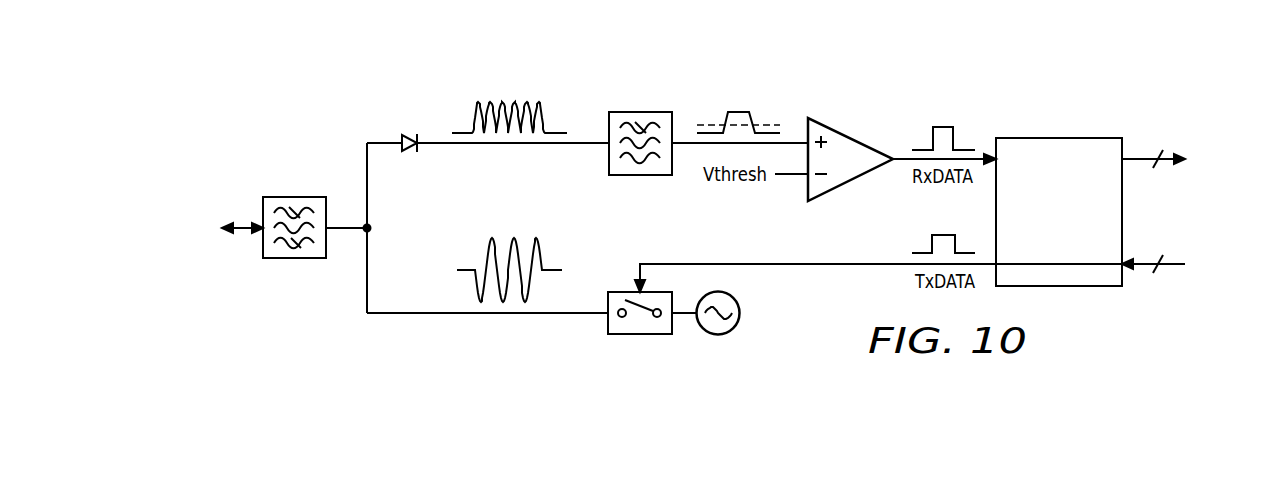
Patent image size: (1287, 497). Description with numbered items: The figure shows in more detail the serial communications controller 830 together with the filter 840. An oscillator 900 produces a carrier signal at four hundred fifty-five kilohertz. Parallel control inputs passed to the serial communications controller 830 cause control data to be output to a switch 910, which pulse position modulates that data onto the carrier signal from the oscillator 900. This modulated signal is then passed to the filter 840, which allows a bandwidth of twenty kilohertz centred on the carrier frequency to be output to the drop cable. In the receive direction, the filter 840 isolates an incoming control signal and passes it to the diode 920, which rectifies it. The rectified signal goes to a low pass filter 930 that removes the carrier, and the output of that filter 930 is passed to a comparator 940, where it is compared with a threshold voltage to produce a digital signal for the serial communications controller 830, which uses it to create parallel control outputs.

The filter 840 is at (292, 197).
The diode 920 is at (412, 150).
The low pass filter 930 is at (640, 112).
The comparator 940 is at (848, 133).
The serial communications controller 830 is at (1065, 138).
The switch 910 is at (622, 292).
The oscillator 900 is at (741, 313).